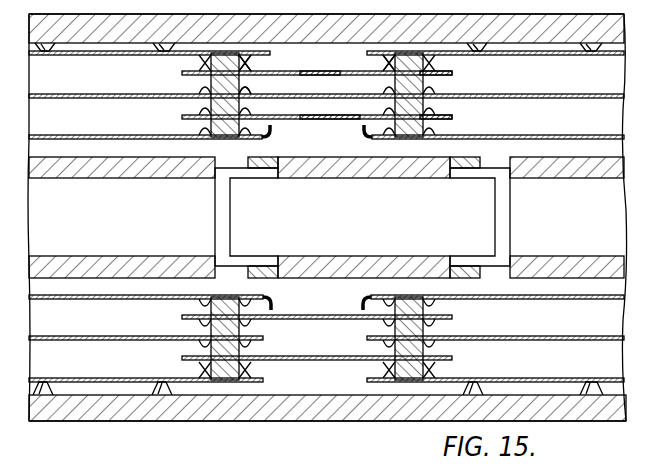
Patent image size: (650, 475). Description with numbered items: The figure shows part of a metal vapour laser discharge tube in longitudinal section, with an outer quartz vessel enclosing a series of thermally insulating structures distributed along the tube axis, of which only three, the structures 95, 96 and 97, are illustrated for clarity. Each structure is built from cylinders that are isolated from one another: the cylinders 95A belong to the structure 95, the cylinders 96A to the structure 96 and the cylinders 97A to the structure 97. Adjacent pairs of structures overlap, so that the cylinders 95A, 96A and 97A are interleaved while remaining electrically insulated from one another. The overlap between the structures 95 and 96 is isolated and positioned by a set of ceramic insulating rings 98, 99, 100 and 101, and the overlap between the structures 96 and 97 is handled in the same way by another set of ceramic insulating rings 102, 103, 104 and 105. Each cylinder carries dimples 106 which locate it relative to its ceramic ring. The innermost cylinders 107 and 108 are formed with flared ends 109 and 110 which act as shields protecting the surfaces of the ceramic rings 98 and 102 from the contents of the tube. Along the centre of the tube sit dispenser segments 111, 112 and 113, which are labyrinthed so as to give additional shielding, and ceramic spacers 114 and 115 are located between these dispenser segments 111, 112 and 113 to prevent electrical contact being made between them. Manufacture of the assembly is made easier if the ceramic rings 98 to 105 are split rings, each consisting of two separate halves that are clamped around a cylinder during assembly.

The thermally insulating structure 95 is at (47, 122).
The cylinders of structure 95 95A is at (83, 55).
The thermally insulating structure 96 is at (337, 122).
The cylinders of structure 96 96A is at (314, 77).
The thermally insulating structure 97 is at (607, 117).
The cylinders of structure 97 97A is at (580, 55).
The ceramic insulating ring 98 is at (182, 117).
The ceramic insulating ring 99 is at (259, 100).
The ceramic insulating ring 100 is at (182, 75).
The ceramic insulating ring 101 is at (258, 65).
The ceramic insulating ring 102 is at (413, 139).
The ceramic insulating ring 103 is at (453, 116).
The ceramic insulating ring 104 is at (453, 75).
The ceramic insulating ring 105 is at (367, 64).
The dimples 106 is at (205, 139).
The innermost cylinder 107 is at (73, 139).
The innermost cylinder 108 is at (582, 139).
The flared end 109 is at (271, 306).
The flared end 110 is at (363, 306).
The dispenser segment 111 is at (163, 167).
The dispenser segment 112 is at (297, 259).
The dispenser segment 113 is at (535, 167).
The ceramic spacer 114 is at (272, 170).
The ceramic spacer 115 is at (452, 172).